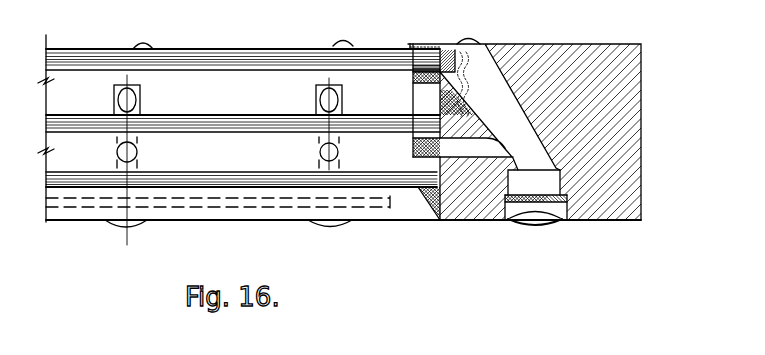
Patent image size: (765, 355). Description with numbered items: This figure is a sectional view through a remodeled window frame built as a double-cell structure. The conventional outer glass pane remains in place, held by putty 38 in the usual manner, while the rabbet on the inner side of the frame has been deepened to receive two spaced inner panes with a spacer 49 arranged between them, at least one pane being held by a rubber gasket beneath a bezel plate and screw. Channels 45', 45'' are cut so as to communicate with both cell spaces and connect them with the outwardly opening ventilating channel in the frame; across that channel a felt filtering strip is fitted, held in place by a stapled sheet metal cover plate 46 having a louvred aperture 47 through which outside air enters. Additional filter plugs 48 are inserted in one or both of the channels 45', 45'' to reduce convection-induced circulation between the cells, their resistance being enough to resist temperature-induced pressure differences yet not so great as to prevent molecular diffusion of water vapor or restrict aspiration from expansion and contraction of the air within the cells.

The putty 38 is at (418, 192).
The channel 45' is at (296, 136).
The channel 45'' is at (270, 135).
The sheet metal cover plate 46 is at (511, 222).
The louvred aperture 47 is at (542, 225).
The filter plug 48 is at (440, 100).
The spacer 49 is at (413, 78).